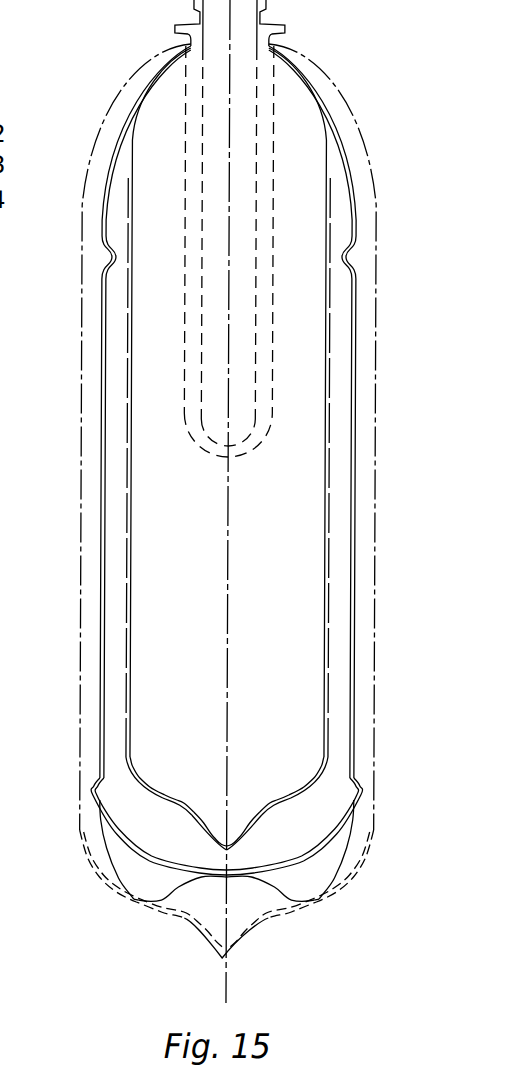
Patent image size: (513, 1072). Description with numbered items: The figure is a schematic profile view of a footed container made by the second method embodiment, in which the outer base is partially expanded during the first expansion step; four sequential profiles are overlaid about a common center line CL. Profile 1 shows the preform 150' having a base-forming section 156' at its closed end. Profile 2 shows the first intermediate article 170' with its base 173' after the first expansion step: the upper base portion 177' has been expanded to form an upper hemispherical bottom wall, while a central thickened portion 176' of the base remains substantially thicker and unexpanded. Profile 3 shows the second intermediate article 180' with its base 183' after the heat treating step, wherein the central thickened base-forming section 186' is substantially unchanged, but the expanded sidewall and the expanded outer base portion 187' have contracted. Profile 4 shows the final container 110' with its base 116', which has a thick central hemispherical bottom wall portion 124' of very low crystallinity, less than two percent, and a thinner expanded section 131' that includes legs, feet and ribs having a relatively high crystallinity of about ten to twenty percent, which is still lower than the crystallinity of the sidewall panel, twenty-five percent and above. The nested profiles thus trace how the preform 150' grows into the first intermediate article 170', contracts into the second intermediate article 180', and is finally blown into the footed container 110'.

The profile 1 is at (266, 248).
The profile 2 is at (214, 521).
The profile 3 is at (221, 449).
The profile 4 is at (210, 501).
The final container 110' is at (210, 501).
The base 116' is at (207, 849).
The thick central hemispherical bottom wall portion 124' is at (201, 916).
The thinner expanded section 131' is at (205, 874).
The preform 150' is at (204, 271).
The base-forming section 156' is at (215, 455).
The first intermediate article 170' is at (195, 521).
The base 173' is at (191, 906).
The central thickened portion 176' is at (180, 958).
The upper base portion 177' is at (179, 866).
The second intermediate article 180' is at (178, 449).
The base 183' is at (227, 766).
The central thickened base-forming section 186' is at (234, 788).
The expanded outer base portion 187' is at (227, 759).
The center line CL is at (226, 979).